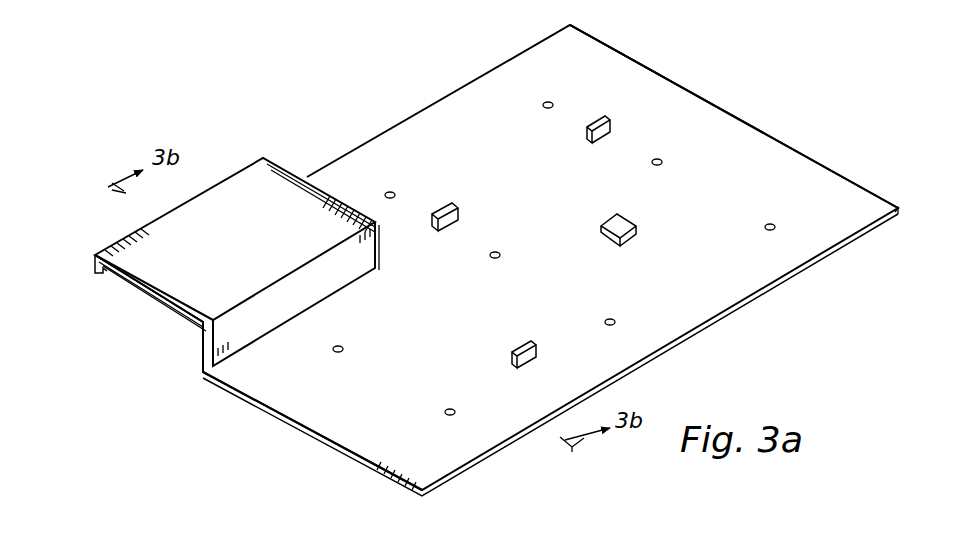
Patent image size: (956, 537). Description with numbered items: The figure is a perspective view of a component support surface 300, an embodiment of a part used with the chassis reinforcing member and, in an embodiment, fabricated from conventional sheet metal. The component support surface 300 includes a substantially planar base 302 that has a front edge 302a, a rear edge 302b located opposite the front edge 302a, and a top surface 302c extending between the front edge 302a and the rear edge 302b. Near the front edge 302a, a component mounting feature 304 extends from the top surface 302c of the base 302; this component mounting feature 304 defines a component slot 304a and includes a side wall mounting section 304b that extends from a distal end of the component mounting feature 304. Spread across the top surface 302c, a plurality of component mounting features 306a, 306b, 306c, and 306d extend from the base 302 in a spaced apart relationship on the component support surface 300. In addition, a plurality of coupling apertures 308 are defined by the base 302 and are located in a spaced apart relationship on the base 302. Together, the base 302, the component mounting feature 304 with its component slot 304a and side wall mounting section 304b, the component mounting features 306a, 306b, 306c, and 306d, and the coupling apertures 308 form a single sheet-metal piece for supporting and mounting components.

The component support surface 300 is at (372, 97).
The substantially planar base 302 is at (790, 143).
The front edge 302a is at (297, 421).
The rear edge 302b is at (710, 100).
The top surface 302c is at (638, 77).
The component mounting feature 304 is at (226, 175).
The component slot 304a is at (143, 322).
The side wall mounting section 304b is at (96, 268).
The component mounting feature 306a is at (445, 232).
The component mounting feature 306b is at (585, 135).
The component mounting feature 306c is at (637, 230).
The component mounting feature 306d is at (520, 343).
The coupling apertures 308 is at (393, 192).